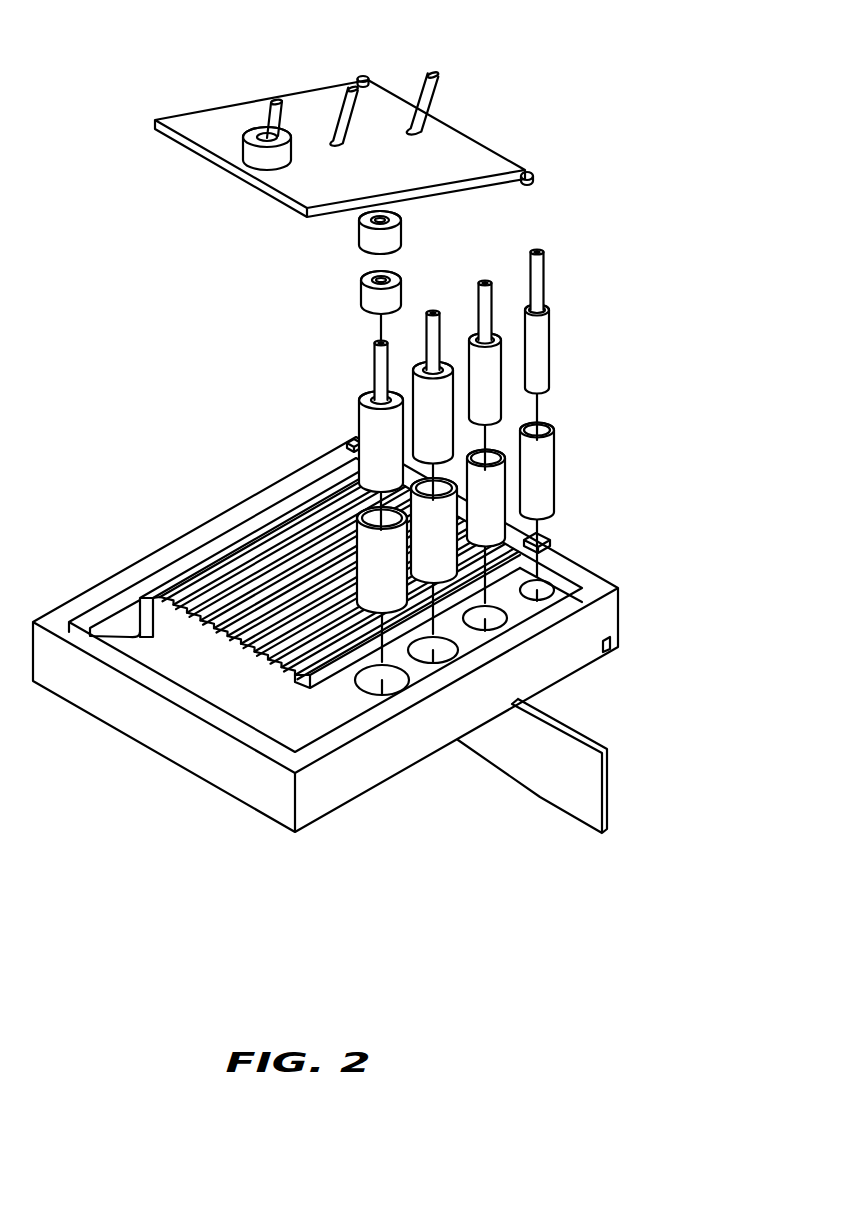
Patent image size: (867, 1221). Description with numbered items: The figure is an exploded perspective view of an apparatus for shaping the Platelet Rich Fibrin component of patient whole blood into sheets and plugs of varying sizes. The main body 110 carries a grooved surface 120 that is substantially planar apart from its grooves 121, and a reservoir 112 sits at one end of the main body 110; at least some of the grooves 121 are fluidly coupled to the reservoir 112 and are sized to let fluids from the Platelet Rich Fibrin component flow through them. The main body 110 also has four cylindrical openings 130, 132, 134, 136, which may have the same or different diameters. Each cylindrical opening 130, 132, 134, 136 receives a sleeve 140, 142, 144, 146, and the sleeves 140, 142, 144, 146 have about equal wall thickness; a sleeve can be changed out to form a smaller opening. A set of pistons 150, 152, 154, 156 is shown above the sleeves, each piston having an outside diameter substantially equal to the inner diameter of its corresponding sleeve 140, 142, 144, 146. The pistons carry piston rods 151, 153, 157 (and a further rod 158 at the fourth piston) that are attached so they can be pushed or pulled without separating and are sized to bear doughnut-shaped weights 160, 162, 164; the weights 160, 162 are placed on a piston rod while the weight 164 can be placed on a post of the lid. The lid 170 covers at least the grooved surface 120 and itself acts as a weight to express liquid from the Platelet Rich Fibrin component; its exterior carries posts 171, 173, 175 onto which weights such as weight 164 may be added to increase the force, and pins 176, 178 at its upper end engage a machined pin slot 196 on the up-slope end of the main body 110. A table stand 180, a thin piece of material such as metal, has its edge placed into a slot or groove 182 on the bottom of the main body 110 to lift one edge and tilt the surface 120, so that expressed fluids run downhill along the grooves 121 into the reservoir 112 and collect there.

The main body 110 is at (248, 790).
The reservoir 112 is at (172, 660).
The grooved surface 120 is at (250, 603).
The grooves 121 is at (188, 597).
The cylindrical opening 130 is at (382, 682).
The cylindrical opening 132 is at (435, 652).
The cylindrical opening 134 is at (502, 624).
The cylindrical opening 136 is at (555, 590).
The sleeve 140 is at (235, 647).
The sleeve 142 is at (466, 528).
The sleeve 144 is at (510, 488).
The sleeve 146 is at (555, 453).
The piston 150 is at (359, 421).
The piston rod 151 is at (374, 375).
The piston 152 is at (445, 407).
The piston rod 153 is at (433, 310).
The piston 154 is at (502, 370).
The piston 156 is at (550, 328).
The piston rod 157 is at (486, 280).
The pin 158 is at (541, 252).
The doughnut shaped weight 160 is at (362, 297).
The doughnut shaped weight 162 is at (360, 237).
The doughnut shaped weight 164 is at (243, 148).
The lid 170 is at (490, 157).
The post 171 is at (275, 101).
The post 173 is at (344, 103).
The post 175 is at (433, 73).
The pin 176 is at (534, 178).
The pin 178 is at (366, 76).
The table stand 180 is at (573, 802).
The slot or groove 182 is at (612, 645).
The machined pin slot 196 is at (551, 542).